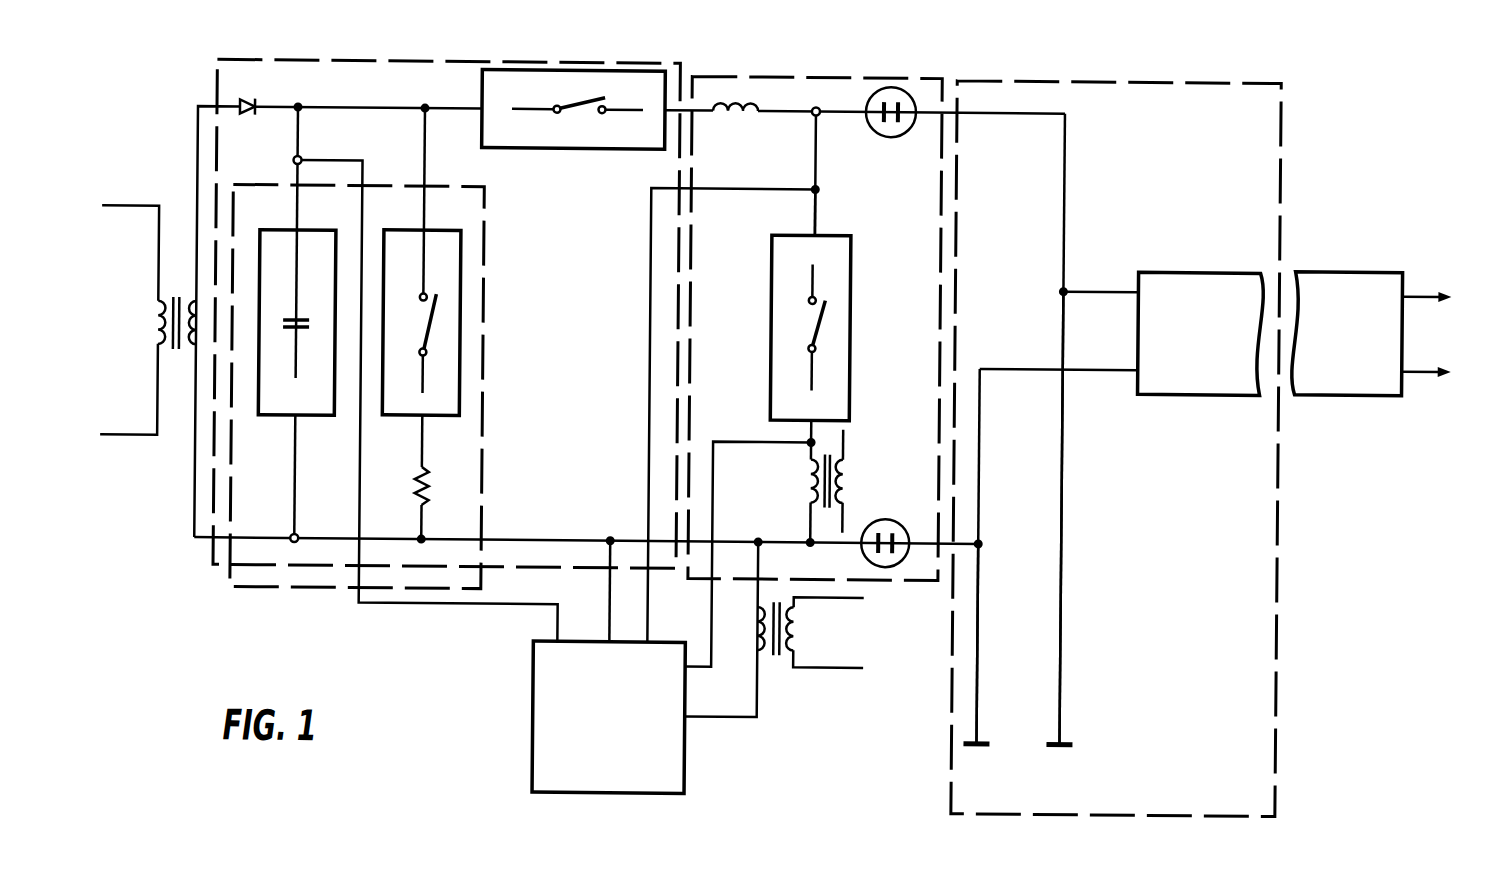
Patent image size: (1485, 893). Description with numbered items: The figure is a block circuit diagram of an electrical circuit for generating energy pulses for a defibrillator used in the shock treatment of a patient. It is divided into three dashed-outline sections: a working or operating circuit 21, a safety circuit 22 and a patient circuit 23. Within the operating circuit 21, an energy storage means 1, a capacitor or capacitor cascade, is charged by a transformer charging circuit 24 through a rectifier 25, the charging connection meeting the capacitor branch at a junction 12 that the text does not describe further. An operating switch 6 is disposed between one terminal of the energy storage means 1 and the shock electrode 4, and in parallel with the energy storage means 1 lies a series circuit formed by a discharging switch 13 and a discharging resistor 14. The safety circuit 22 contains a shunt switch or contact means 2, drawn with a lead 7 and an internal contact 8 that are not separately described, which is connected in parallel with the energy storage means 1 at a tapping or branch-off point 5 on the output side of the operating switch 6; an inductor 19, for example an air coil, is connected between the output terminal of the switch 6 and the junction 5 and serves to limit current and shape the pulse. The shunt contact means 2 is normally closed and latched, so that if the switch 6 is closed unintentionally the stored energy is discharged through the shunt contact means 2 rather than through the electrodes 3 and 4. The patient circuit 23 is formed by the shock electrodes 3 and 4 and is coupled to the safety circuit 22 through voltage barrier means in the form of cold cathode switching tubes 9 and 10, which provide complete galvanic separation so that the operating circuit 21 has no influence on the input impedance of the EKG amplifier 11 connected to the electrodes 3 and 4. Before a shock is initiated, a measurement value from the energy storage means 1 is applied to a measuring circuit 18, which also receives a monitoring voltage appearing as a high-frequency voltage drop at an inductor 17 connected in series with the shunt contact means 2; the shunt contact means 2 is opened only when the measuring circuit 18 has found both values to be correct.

The energy storage means 1 is at (318, 422).
The shunt switch or contact means 2 is at (853, 267).
The shock electrode 3 is at (990, 735).
The shock electrode 4 is at (1077, 735).
The tapping or branch-off point 5 is at (817, 104).
The operating switch 6 is at (575, 152).
The lead to switch unit 7 is at (818, 231).
The discharge switch contact 8 is at (788, 376).
The cold cathode switching tube 9 is at (896, 86).
The cold cathode switching tube 10 is at (897, 520).
The EKG amplifier 11 is at (1186, 272).
The junction point 12 is at (422, 102).
The discharging switch 13 is at (436, 230).
The discharging resistor 14 is at (428, 470).
The inductor 17 is at (850, 482).
The measuring circuit 18 is at (537, 665).
The inductor 19 is at (736, 95).
The operating circuit 21 is at (343, 59).
The safety circuit 22 is at (814, 74).
The patient circuit 23 is at (1101, 76).
The transformer charging circuit 24 is at (156, 308).
The rectifier 25 is at (257, 99).